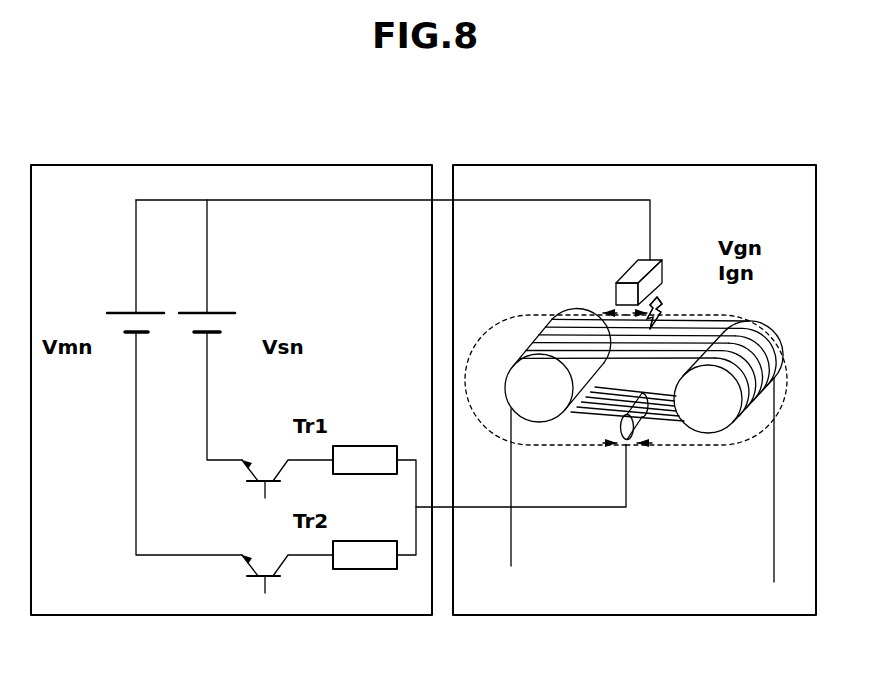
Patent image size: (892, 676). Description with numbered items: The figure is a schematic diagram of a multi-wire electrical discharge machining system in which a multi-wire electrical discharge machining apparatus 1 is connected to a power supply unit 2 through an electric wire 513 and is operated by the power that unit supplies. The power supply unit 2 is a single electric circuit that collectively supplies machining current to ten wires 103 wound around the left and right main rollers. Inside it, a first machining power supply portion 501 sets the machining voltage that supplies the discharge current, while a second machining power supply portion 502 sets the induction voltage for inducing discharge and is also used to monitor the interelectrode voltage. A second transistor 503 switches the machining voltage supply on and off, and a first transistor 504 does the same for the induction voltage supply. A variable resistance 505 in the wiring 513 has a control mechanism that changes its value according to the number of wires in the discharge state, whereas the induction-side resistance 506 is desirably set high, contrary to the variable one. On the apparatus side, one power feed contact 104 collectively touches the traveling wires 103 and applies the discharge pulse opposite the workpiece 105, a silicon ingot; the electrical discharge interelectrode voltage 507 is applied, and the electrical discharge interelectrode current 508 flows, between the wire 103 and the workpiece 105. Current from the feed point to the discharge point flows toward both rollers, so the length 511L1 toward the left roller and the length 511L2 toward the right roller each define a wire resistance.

The multi-wire electrical discharge machining apparatus 1 is at (701, 156).
The power supply unit 2 is at (304, 156).
The wire 103 is at (513, 537).
The power feed contact 104 is at (637, 430).
The workpiece 105 is at (623, 272).
The machining power supply portion Vmn 501 is at (114, 327).
The machining power supply portion Vsn 502 is at (236, 327).
The transistor Tr2 503 is at (265, 553).
The transistor Tr1 504 is at (265, 458).
The resistance Rmn 505 is at (363, 541).
The resistance Rsn 506 is at (363, 446).
The electrical discharge interelectrode voltage Vgn 507 is at (660, 282).
The electrical discharge interelectrode current Ign 508 is at (662, 300).
The length L1 511L1 is at (560, 445).
The length L2 511L2 is at (712, 445).
The electric wire 513 is at (618, 509).